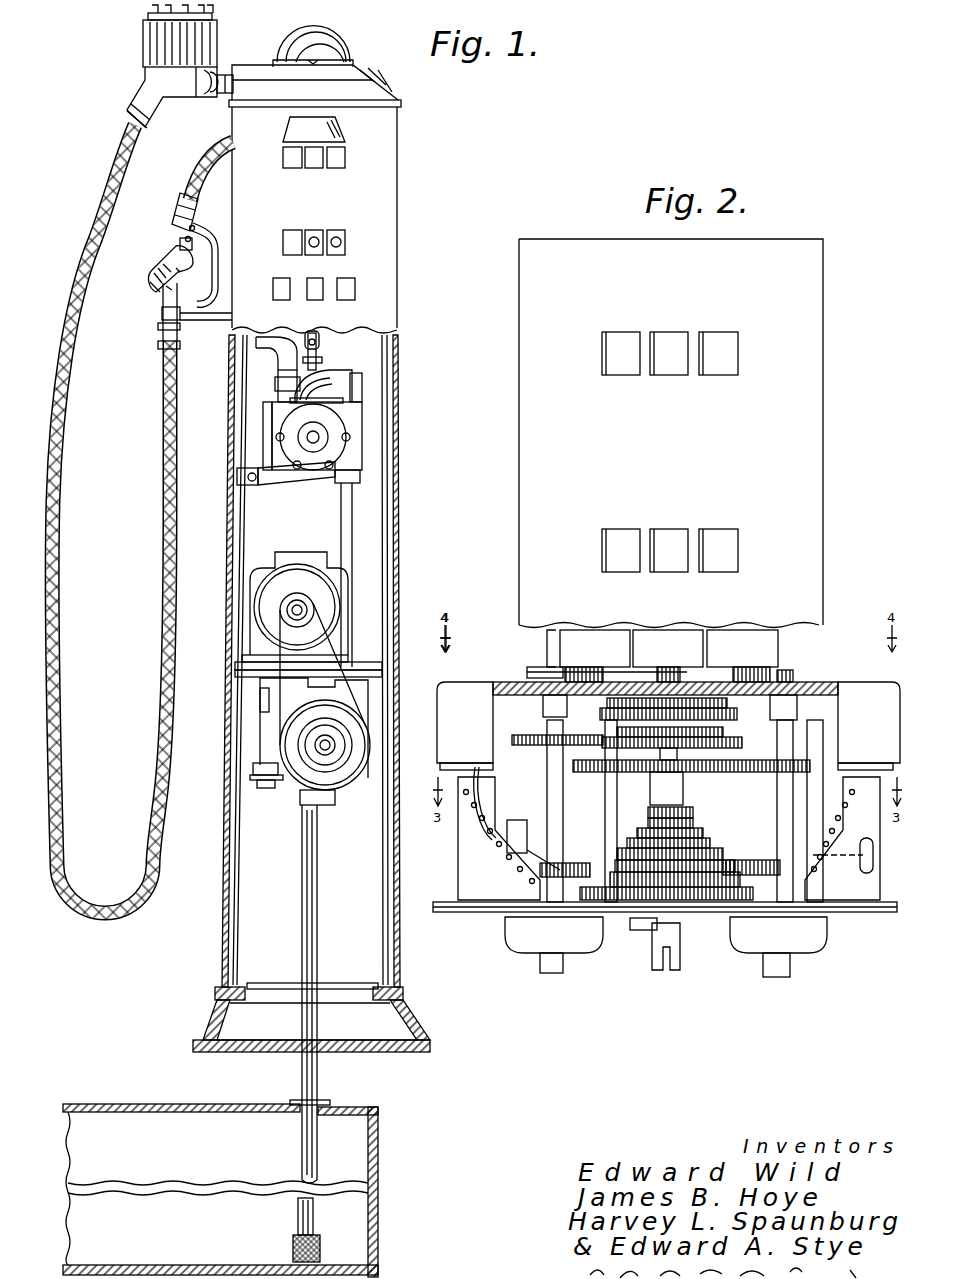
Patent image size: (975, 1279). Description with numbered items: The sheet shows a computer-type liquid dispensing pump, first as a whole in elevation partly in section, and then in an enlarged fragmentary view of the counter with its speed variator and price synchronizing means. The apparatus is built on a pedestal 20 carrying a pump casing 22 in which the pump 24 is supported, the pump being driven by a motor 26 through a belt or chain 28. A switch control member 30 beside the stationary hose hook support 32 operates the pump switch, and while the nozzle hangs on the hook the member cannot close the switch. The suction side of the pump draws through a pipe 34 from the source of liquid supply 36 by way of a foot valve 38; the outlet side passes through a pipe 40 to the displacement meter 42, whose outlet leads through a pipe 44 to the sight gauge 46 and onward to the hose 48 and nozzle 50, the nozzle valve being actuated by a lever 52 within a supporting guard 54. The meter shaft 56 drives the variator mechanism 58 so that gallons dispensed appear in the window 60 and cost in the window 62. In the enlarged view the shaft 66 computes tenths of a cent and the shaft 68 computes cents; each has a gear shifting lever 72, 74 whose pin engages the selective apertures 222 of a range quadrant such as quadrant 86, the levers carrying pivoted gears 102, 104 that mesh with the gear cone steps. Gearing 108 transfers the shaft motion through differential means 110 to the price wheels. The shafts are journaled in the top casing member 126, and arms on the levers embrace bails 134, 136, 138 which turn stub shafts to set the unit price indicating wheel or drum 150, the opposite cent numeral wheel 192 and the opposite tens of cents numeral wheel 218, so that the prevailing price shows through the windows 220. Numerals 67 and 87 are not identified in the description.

In FIG. 1, the pedestal 20 is at (410, 1017).
In FIG. 1, the pump casing 22 is at (400, 877).
In FIG. 1, the pump 24 is at (270, 790).
In FIG. 1, the motor 26 is at (263, 570).
In FIG. 1, the belt or chain 28 is at (333, 643).
In FIG. 1, the switch control member 30 is at (170, 345).
In FIG. 1, the stationary hose hook support 32 is at (212, 330).
In FIG. 1, the pipe 34 is at (313, 880).
In FIG. 1, the source of liquid supply 36 is at (378, 1157).
In FIG. 1, the foot valve 38 is at (293, 1247).
In FIG. 1, the pipe 40 is at (348, 540).
In FIG. 1, the meter 42 is at (350, 458).
In FIG. 1, the pipe 44 is at (270, 350).
In FIG. 1, the sight gauge 46 is at (143, 38).
In FIG. 1, the hose 48 is at (120, 165).
In FIG. 1, the nozzle 50 is at (168, 264).
In FIG. 1, the lever 52 is at (193, 273).
In FIG. 1, the supporting guard 54 is at (212, 232).
In FIG. 1, the meter shaft 56 is at (322, 337).
In FIG. 2, the meter shaft 56 is at (663, 957).
In FIG. 2, the variator mechanism 58 is at (703, 910).
In FIG. 1, the window 60 is at (345, 240).
In FIG. 2, the window 60 is at (738, 552).
In FIG. 1, the window 62 is at (345, 155).
In FIG. 2, the window 62 is at (738, 350).
In FIG. 2, the shaft 66 is at (820, 740).
In FIG. 2, the nut 67 is at (620, 900).
In FIG. 2, the shaft 68 is at (563, 802).
In FIG. 2, the gear shifting lever 72 is at (855, 853).
In FIG. 2, the gear shifting lever 74 is at (517, 827).
In FIG. 2, the range quadrant 86 is at (477, 880).
In FIG. 2, the side plate 87 is at (848, 892).
In FIG. 2, the pivoted gear 102 is at (740, 862).
In FIG. 2, the pivoted gear 104 is at (590, 865).
In FIG. 2, the gearing 108 is at (530, 738).
In FIG. 2, the differential means 110 is at (743, 762).
In FIG. 2, the top casing member 126 is at (818, 693).
In FIG. 2, the bail 134 is at (827, 763).
In FIG. 2, the bail 136 is at (507, 707).
In FIG. 2, the bail 138 is at (633, 797).
In FIG. 2, the unit price indicating wheel or drum 150 is at (780, 652).
In FIG. 2, the opposite cent numeral wheel 192 is at (683, 640).
In FIG. 2, the opposite tens of cents numeral wheel 218 is at (610, 636).
In FIG. 1, the windows 220 is at (355, 287).
In FIG. 2, the selective apertures 222 is at (483, 805).